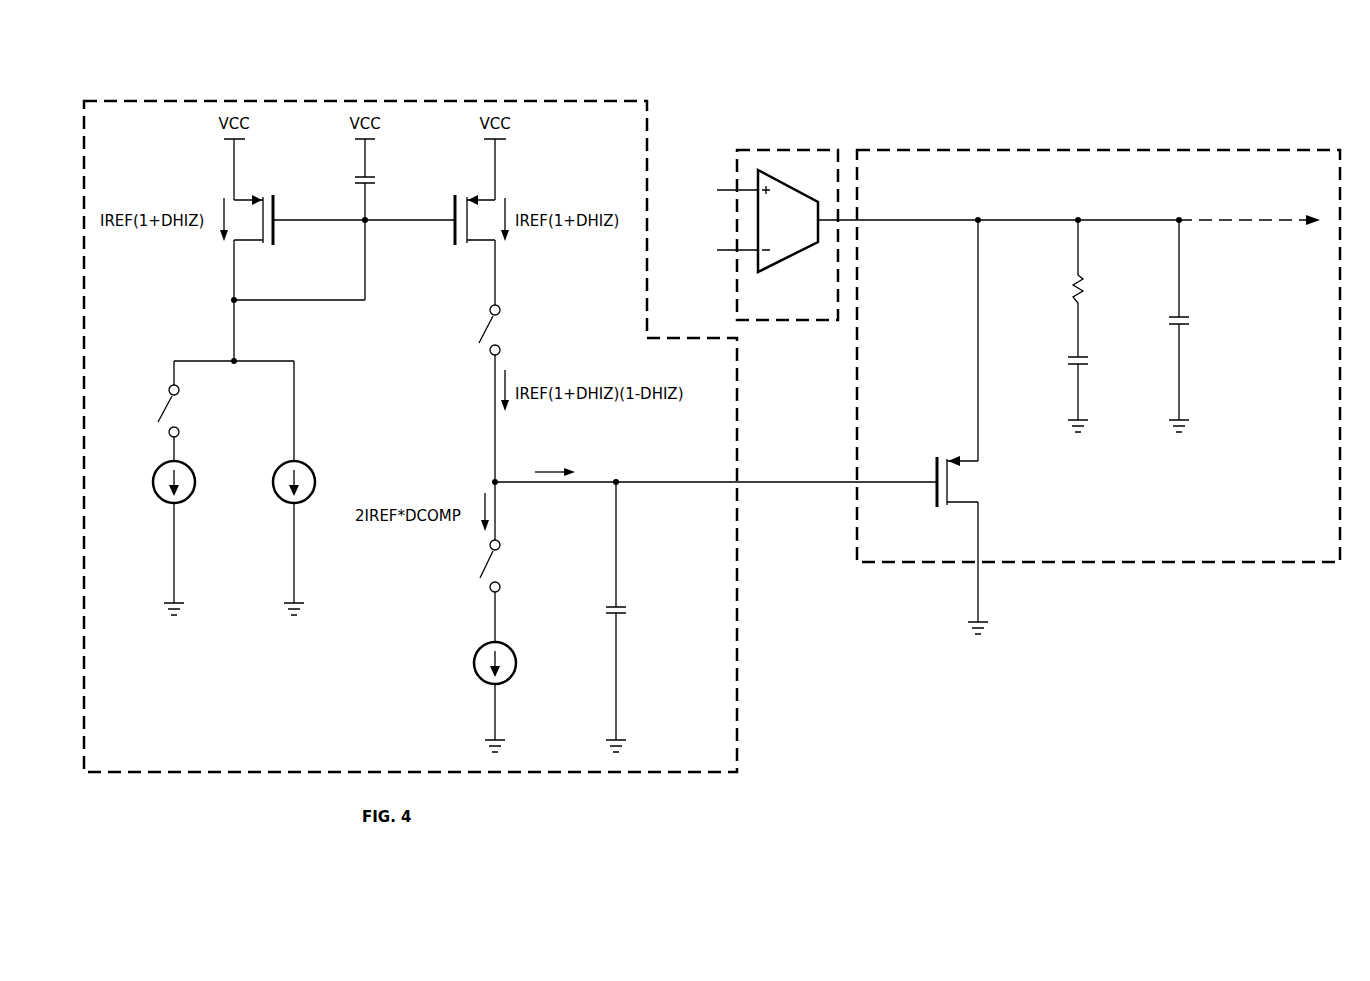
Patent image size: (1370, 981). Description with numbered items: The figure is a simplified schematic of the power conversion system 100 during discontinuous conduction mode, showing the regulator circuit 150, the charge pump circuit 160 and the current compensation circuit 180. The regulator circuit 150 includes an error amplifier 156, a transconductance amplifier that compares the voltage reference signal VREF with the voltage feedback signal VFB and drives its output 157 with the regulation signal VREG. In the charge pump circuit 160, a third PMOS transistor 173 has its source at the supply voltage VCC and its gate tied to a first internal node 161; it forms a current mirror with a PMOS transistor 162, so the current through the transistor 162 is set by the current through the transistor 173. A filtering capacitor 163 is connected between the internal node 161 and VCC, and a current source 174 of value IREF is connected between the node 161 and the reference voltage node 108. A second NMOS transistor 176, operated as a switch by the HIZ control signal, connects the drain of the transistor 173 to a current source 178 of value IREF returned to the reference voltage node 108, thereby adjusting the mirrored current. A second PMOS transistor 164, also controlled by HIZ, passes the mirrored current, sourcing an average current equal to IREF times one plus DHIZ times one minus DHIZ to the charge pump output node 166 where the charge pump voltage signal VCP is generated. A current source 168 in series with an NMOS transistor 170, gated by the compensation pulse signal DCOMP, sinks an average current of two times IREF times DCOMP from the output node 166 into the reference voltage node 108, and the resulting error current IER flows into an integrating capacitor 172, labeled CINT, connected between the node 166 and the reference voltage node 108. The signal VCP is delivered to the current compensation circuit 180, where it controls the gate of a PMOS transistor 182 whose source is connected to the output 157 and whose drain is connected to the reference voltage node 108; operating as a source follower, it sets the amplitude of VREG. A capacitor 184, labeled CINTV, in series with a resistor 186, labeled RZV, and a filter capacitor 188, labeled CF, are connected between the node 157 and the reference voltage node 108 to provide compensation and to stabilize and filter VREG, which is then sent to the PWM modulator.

The power conversion system 100 is at (1274, 78).
The reference voltage node 108 is at (172, 552).
The regulator circuit 150 is at (790, 142).
The error amplifier 156 is at (786, 260).
The output of the error amplifier 157 is at (915, 218).
The charge pump circuit 160 is at (350, 92).
The first internal node 161 is at (234, 331).
The PMOS transistor 162 is at (454, 211).
The filtering capacitor 163 is at (352, 181).
The second PMOS transistor 164 is at (480, 333).
The charge pump output node 166 is at (558, 486).
The current source 168 is at (474, 663).
The NMOS transistor 170 is at (480, 567).
The integrating capacitor 172 is at (604, 611).
The third PMOS transistor 173 is at (276, 212).
The current source 174 is at (282, 501).
The second NMOS transistor 176 is at (160, 412).
The current source 178 is at (162, 501).
The current compensation circuit 180 is at (1124, 142).
The PMOS transistor 182 is at (935, 493).
The capacitor 184 is at (1090, 361).
The resistor 186 is at (1085, 293).
The filter capacitor 188 is at (1192, 321).